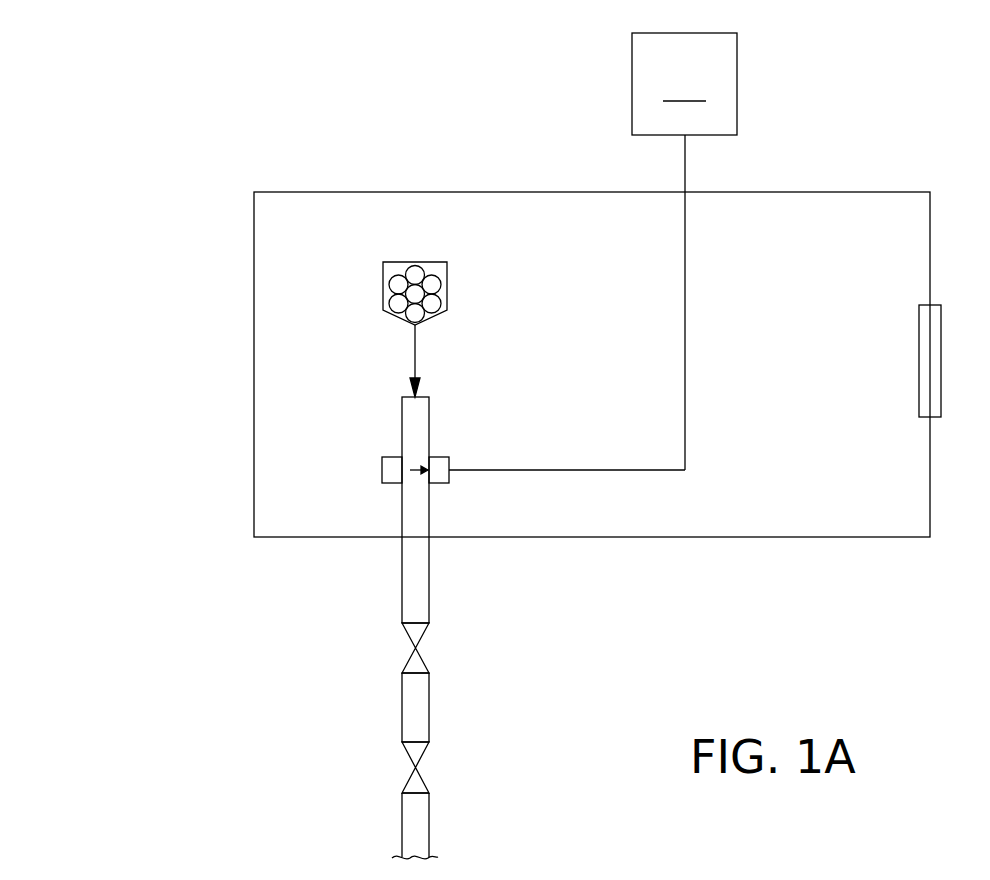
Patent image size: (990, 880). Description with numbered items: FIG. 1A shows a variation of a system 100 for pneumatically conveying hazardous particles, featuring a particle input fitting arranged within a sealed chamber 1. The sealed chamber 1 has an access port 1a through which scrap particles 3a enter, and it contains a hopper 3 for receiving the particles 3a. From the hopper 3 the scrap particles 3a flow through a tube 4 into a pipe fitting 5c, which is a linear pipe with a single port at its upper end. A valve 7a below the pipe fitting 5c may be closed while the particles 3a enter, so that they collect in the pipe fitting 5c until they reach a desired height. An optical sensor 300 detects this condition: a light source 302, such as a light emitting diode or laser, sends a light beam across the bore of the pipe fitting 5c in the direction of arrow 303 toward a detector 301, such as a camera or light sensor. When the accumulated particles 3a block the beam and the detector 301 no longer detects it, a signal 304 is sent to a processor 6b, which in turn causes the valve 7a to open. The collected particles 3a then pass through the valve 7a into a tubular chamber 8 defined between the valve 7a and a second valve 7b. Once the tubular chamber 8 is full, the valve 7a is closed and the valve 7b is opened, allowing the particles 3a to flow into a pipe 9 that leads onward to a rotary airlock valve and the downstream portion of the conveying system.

The system 100 is at (195, 158).
The sealed chamber 1 is at (772, 537).
The access port 1a is at (919, 360).
The hopper 3 is at (447, 286).
The scrap particles 3a is at (400, 265).
The tube 4 is at (415, 350).
The pipe fitting 5c is at (430, 519).
The processor 6b is at (684, 84).
The valve 7a is at (429, 658).
The valve 7b is at (429, 781).
The tubular chamber 8 is at (429, 708).
The pipe 9 is at (402, 820).
The optical sensor 300 is at (362, 485).
The detector 301 is at (449, 470).
The light source 302 is at (382, 470).
The arrow 303 is at (412, 468).
The signal 304 is at (685, 298).